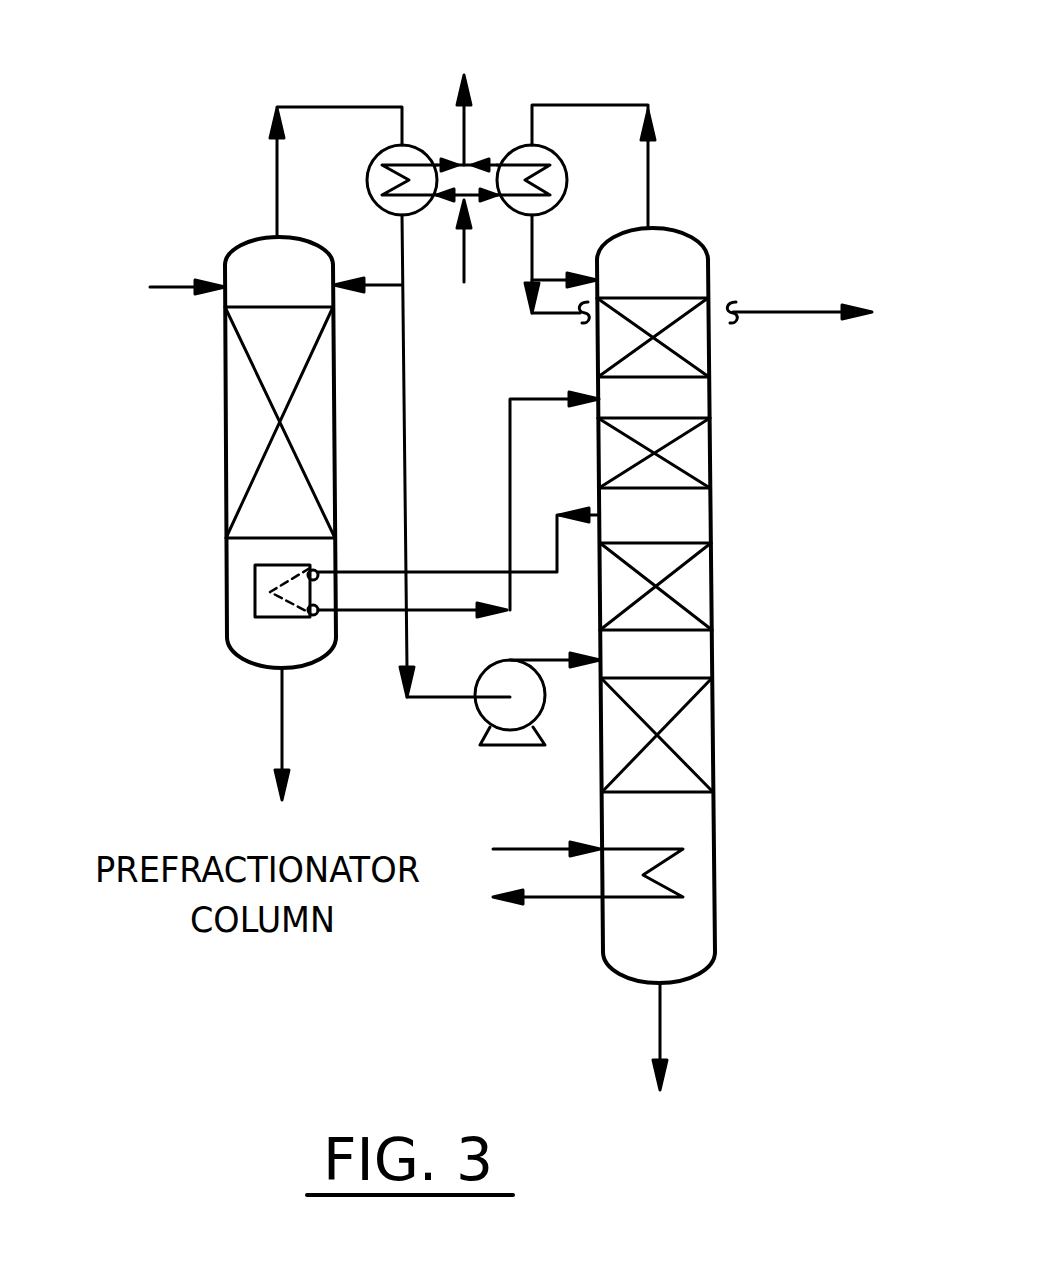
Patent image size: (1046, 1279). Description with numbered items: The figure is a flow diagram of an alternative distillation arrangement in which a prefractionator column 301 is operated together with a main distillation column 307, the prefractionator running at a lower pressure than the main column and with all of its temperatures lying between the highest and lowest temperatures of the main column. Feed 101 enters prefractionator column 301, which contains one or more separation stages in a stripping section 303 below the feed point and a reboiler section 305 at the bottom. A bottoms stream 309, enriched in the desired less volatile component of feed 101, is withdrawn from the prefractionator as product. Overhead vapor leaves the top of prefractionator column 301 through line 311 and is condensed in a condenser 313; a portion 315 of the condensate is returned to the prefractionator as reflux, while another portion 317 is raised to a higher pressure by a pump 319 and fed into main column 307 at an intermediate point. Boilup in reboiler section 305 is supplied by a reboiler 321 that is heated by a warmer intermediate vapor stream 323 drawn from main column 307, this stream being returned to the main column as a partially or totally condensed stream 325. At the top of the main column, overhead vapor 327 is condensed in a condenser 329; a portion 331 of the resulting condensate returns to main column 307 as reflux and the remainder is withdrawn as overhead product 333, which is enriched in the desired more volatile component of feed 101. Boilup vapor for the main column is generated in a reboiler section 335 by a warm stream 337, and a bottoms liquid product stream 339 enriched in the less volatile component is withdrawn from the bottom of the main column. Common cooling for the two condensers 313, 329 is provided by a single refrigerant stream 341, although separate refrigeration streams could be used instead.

The feed 101 is at (175, 287).
The prefractionator column 301 is at (200, 390).
The stripping section 303 is at (257, 515).
The reboiler section 305 is at (243, 557).
The main distillation column 307 is at (738, 647).
The bottoms stream 309 is at (282, 725).
The prefractionator overhead vapor line 311 is at (327, 106).
The condenser 313 is at (367, 180).
The condensate portion returned as reflux 315 is at (378, 280).
The condensate portion pumped to main column 317 is at (404, 468).
The pump 319 is at (483, 712).
The reboiler 321 is at (267, 617).
The intermediate vapor stream 323 is at (460, 571).
The partially or totally condensed stream 325 is at (535, 399).
The overhead vapor 327 is at (650, 147).
The condenser 329 is at (557, 146).
The condensate portion returned as reflux 331 is at (553, 278).
The overhead product 333 is at (778, 312).
The reboiler section 335 is at (680, 876).
The warm stream 337 is at (553, 849).
The bottoms liquid product stream 339 is at (661, 1015).
The refrigerant stream 341 is at (463, 257).